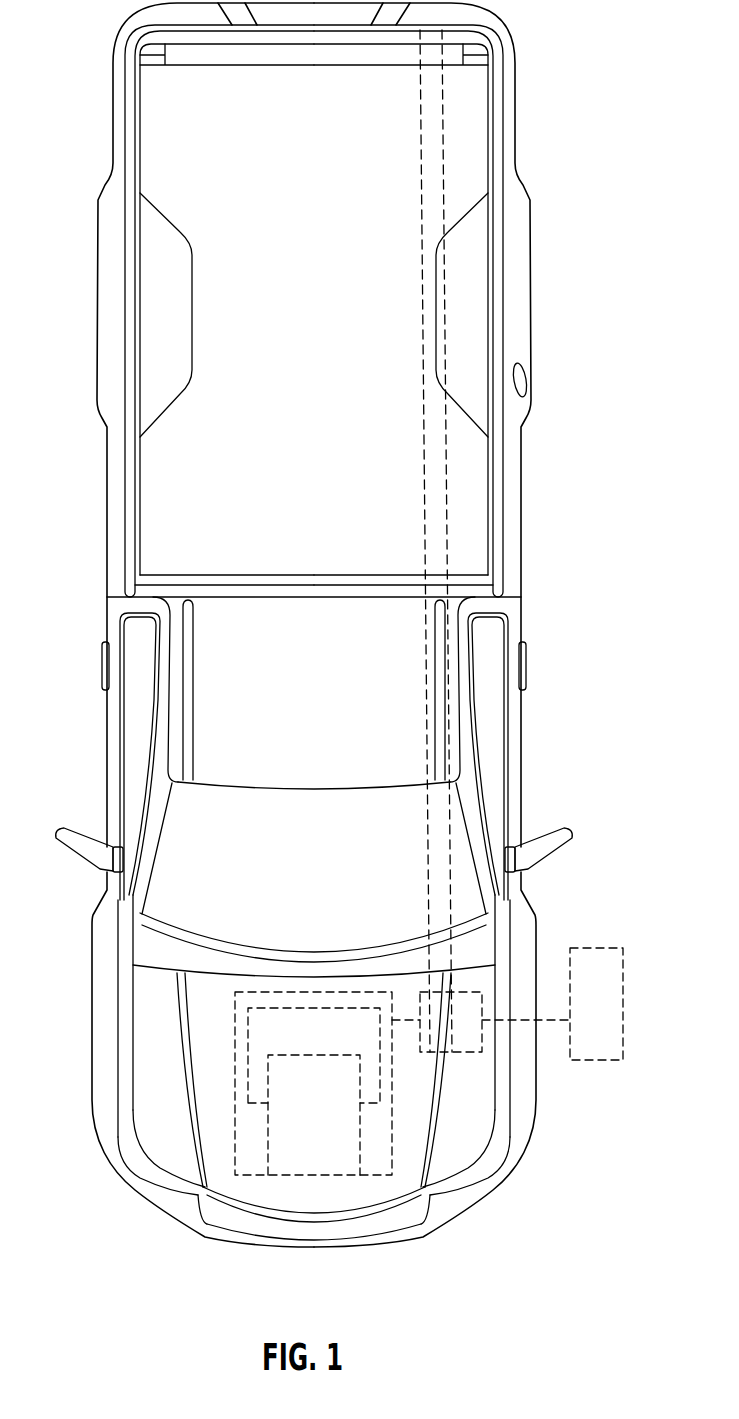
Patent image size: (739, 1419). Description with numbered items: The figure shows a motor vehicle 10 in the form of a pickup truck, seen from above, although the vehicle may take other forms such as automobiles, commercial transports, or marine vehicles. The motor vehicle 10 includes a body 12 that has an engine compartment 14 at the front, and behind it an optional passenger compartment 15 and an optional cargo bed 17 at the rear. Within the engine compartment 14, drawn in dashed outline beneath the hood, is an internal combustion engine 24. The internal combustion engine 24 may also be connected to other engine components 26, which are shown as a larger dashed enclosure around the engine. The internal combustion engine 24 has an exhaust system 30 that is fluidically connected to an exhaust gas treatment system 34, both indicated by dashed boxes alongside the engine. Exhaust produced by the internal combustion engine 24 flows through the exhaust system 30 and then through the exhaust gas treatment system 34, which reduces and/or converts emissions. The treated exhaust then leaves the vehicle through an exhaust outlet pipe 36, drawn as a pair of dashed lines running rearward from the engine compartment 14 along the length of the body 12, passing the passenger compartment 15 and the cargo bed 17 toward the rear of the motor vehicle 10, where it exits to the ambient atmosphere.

The motor vehicle 10 is at (555, 253).
The body 12 is at (522, 497).
The engine compartment 14 is at (178, 1047).
The passenger compartment 15 is at (197, 827).
The cargo bed 17 is at (197, 437).
The internal combustion engine 24 is at (320, 1146).
The other engine components 26 is at (247, 1176).
The exhaust system 30 is at (410, 1139).
The exhaust gas treatment system 34 is at (462, 1066).
The exhaust outlet pipe 36 is at (452, 185).